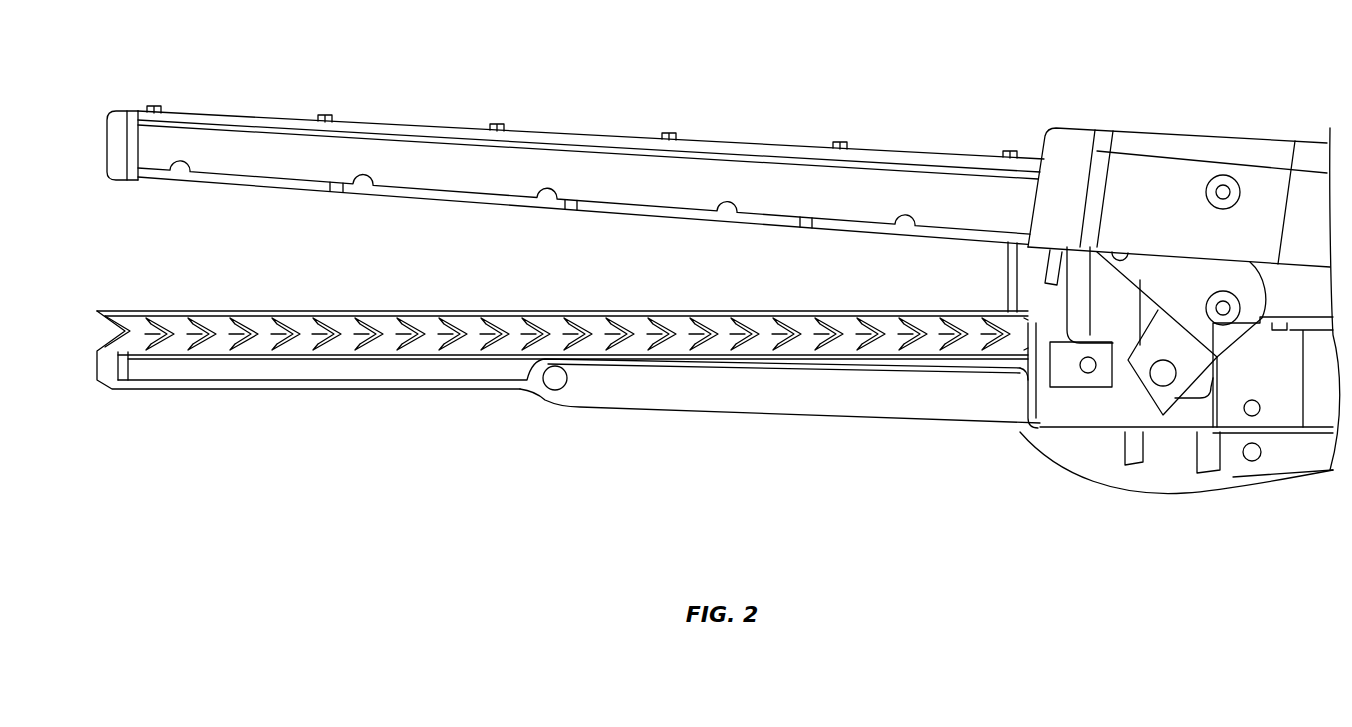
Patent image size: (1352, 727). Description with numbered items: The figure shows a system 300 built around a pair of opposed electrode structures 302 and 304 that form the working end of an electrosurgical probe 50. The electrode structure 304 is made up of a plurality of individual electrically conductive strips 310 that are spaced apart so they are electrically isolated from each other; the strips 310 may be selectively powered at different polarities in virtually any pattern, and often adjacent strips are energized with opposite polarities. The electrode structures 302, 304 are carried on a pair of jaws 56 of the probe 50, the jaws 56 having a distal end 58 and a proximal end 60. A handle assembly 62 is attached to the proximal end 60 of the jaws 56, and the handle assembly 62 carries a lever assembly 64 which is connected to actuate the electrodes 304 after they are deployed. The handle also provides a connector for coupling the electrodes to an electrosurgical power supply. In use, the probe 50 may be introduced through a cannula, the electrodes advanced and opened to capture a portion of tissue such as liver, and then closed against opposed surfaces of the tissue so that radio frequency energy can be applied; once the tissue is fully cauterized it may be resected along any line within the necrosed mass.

The system 300 is at (752, 520).
The electrode structure 302 is at (140, 186).
The electrode structure 304 is at (108, 313).
The electrically conductive strips 310 is at (164, 345).
The jaws 56 is at (452, 205).
The distal end 58 is at (155, 191).
The proximal end 60 is at (982, 242).
The electrosurgical probe 50 is at (1152, 174).
The handle assembly 62 is at (1223, 150).
The lever assembly 64 is at (1191, 367).